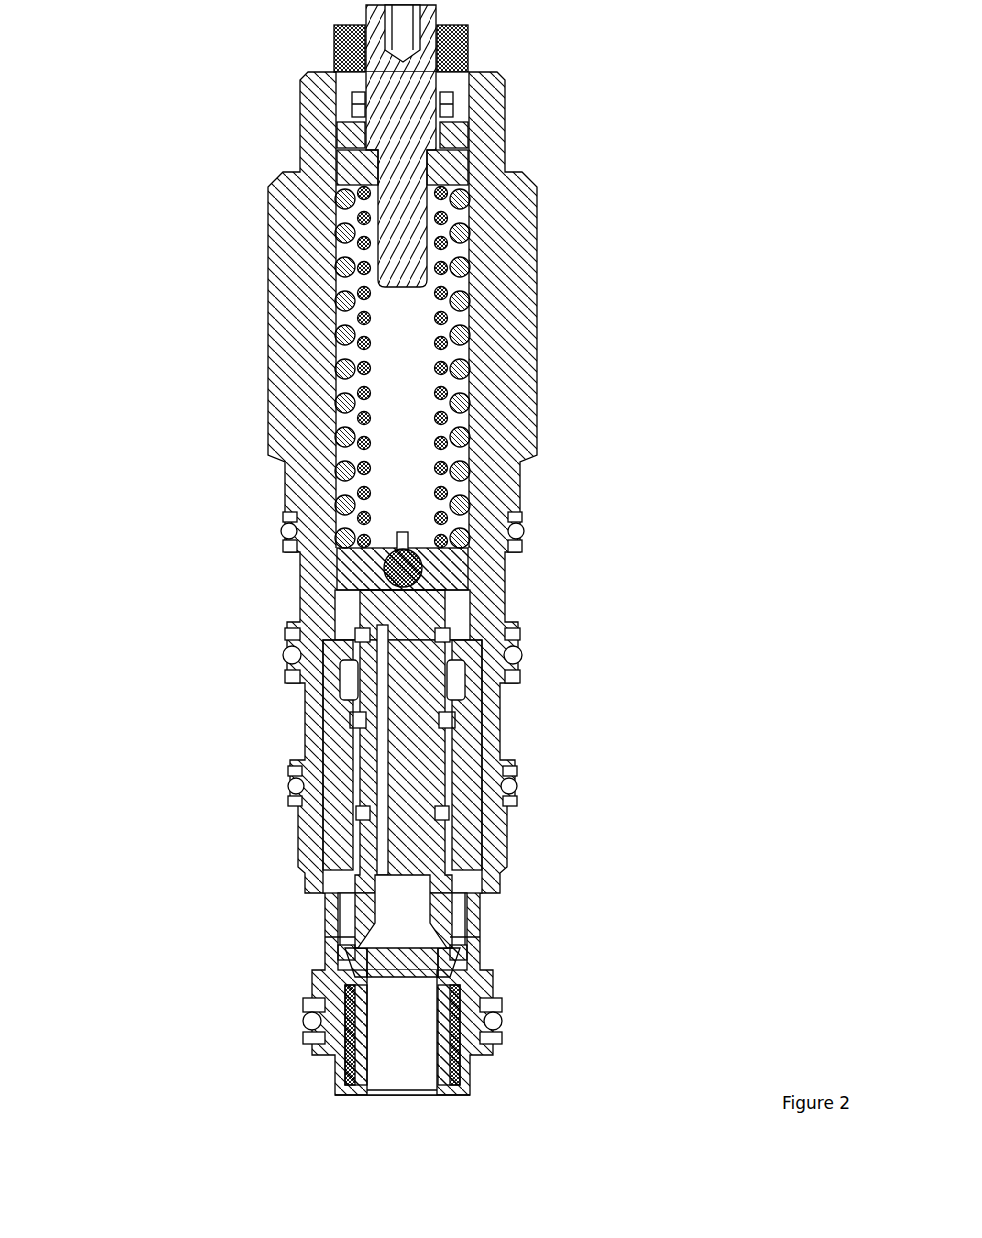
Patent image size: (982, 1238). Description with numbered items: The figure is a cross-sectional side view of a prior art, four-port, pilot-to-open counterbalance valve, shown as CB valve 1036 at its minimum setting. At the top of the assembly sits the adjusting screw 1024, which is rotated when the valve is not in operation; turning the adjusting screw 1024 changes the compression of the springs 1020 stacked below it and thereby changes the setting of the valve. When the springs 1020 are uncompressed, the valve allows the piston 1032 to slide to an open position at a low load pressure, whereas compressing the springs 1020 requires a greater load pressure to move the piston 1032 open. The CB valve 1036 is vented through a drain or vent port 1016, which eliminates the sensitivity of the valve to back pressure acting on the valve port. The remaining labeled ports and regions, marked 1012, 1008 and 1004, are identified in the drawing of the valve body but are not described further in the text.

The CB valve 1036 is at (505, 303).
The adjusting screw 1024 is at (418, 92).
The springs 1020 is at (342, 368).
The drain or vent port 1016 is at (522, 575).
The poppet / spool 1012 is at (522, 705).
The piston 1032 is at (325, 712).
The lower chamber section 1008 is at (502, 925).
The inlet port 1004 is at (395, 1088).